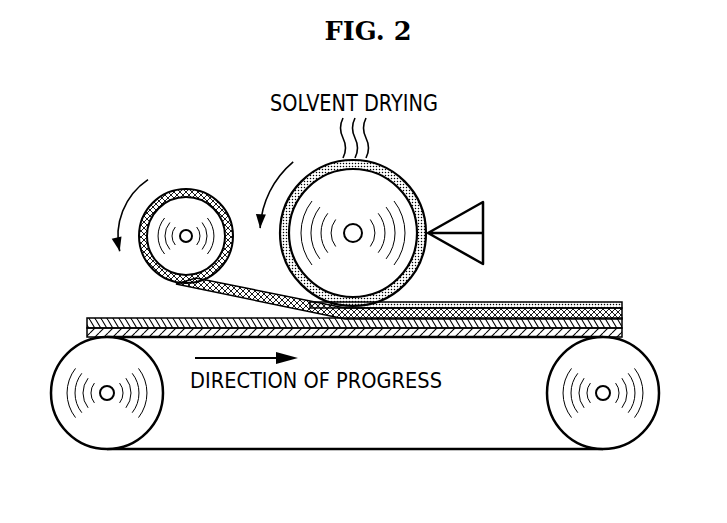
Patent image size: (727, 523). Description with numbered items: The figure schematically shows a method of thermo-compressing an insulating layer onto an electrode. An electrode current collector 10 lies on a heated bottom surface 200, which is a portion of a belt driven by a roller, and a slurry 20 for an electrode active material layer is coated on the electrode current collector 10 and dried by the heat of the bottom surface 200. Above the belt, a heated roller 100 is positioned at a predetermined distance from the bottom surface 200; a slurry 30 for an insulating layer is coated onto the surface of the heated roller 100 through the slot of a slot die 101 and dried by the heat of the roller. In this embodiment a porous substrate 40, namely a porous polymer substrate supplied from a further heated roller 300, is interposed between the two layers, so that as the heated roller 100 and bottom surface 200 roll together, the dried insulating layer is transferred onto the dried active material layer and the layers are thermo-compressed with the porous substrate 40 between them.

The electrode current collector 10 is at (622, 333).
The slurry for an electrode active material layer 20 is at (622, 320).
The slurry for an insulating layer 30 is at (612, 302).
The porous substrate 40 is at (622, 312).
The heated roller 100 is at (395, 197).
The slot die 101 is at (484, 216).
The heated bottom surface 200 is at (553, 450).
The heated roller 300 is at (188, 205).